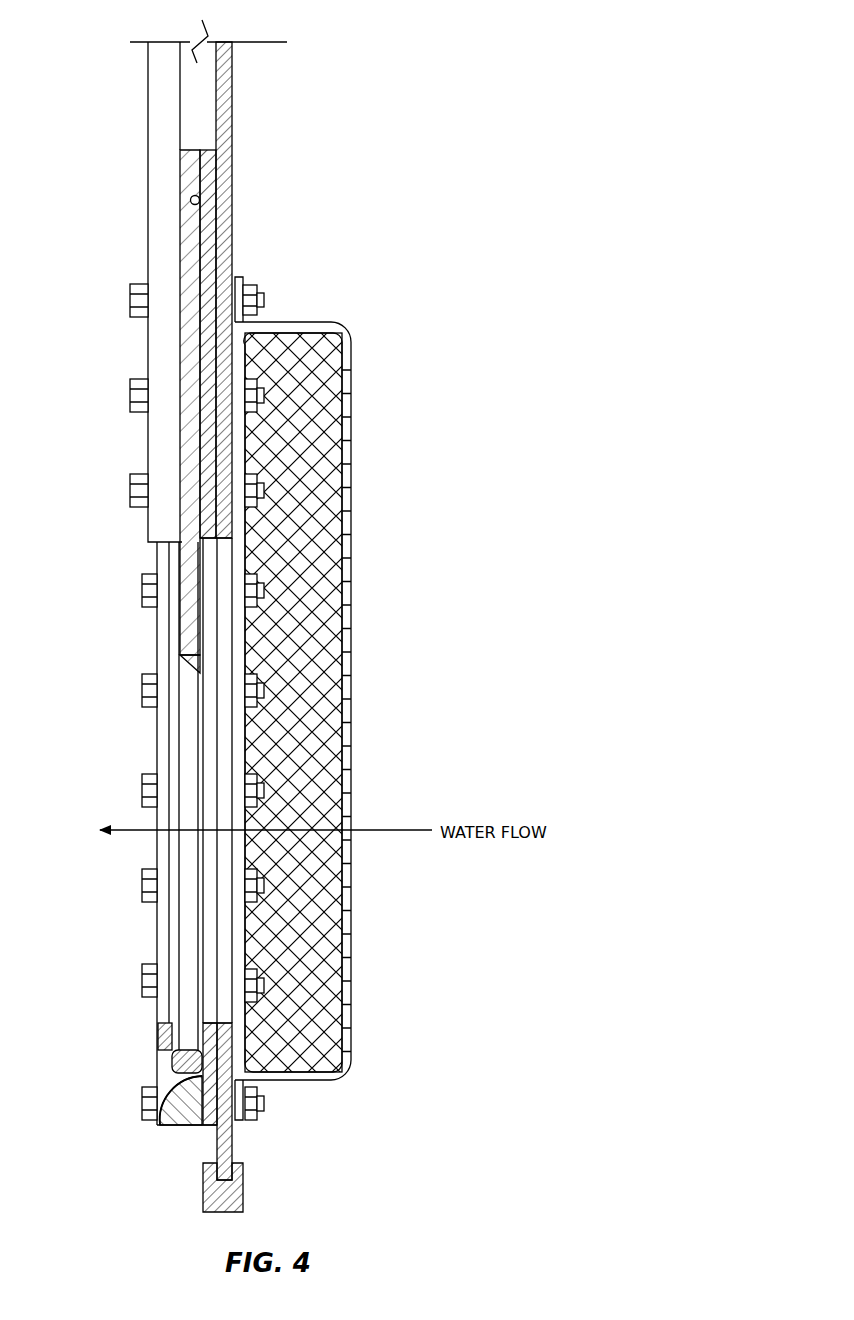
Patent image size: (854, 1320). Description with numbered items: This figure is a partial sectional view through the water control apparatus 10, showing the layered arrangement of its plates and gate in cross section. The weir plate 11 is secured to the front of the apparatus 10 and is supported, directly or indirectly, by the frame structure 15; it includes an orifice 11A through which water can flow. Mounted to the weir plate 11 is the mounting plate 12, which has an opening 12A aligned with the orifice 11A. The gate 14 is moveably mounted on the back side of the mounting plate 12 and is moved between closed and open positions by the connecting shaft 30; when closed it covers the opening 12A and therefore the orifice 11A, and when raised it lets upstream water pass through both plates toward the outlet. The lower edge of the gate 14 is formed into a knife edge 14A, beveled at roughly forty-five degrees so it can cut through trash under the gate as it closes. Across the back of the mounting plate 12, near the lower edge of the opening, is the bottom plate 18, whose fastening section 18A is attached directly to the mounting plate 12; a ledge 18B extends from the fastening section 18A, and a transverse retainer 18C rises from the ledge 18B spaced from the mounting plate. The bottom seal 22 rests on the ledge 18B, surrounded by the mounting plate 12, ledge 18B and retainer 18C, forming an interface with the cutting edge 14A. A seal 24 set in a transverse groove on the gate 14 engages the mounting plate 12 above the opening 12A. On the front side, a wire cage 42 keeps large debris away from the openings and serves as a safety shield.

The apparatus 10 is at (405, 42).
The connecting shaft 30 is at (160, 92).
The mounting plate 12 is at (206, 170).
The seal 24 is at (199, 200).
The weir plate 11 is at (228, 215).
The wire cage 42 is at (352, 456).
The opening 12A is at (208, 540).
The gate 14 is at (190, 622).
The knife edge 14A is at (186, 655).
The orifice 11A is at (214, 1045).
The transverse retainer 18C is at (165, 1038).
The bottom seal 22 is at (176, 1058).
The ledge 18B is at (160, 1120).
The bottom plate 18 is at (157, 1139).
The fastening section 18A is at (192, 1078).
The frame structure 15 is at (240, 1202).